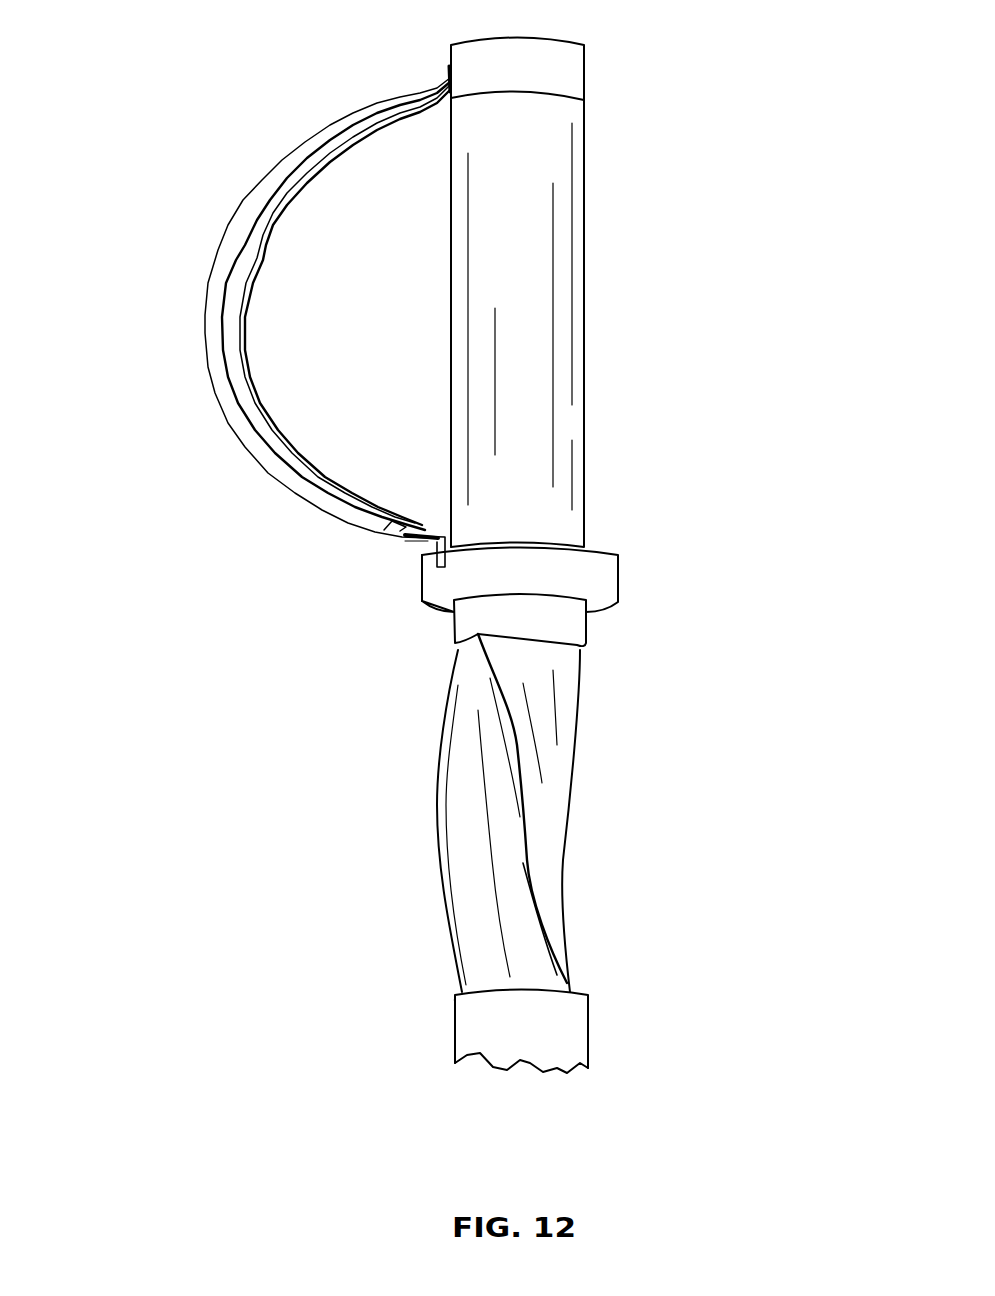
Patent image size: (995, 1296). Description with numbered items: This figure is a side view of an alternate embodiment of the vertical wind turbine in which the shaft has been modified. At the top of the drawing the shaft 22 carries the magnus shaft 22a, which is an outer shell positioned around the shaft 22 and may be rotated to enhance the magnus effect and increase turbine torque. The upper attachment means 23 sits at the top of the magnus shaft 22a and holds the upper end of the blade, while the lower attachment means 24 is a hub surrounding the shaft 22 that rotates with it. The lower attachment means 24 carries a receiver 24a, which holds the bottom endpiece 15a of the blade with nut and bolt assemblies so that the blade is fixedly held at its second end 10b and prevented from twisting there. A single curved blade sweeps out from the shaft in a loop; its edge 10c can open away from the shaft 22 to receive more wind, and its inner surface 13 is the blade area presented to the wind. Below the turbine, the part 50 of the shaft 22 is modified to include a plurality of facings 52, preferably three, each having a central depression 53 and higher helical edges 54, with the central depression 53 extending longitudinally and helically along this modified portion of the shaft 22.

The second end 10b is at (391, 561).
The edge 10c is at (257, 215).
The inner surface 13 is at (266, 249).
The bottom endpiece 15a is at (415, 539).
The shaft 22 is at (563, 1023).
The magnus shaft 22a is at (537, 288).
The upper attachment means 23 is at (570, 62).
The lower attachment means 24 is at (600, 572).
The receiver 24a is at (427, 534).
The shaft portion 50 is at (652, 940).
The facing 52 is at (466, 957).
The central depression 53 is at (545, 698).
The helical edge 54 is at (580, 713).